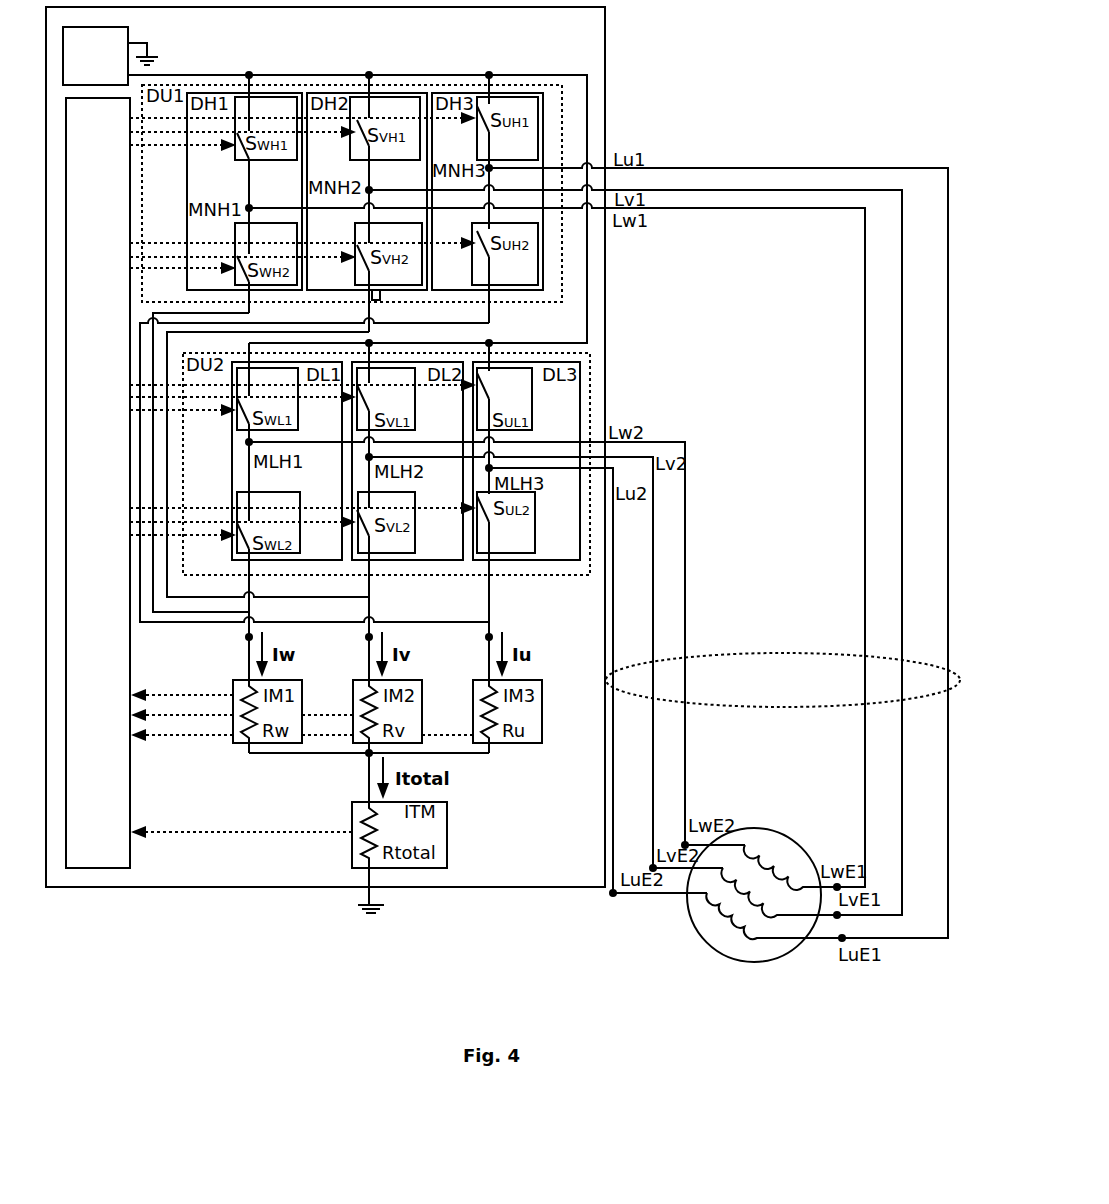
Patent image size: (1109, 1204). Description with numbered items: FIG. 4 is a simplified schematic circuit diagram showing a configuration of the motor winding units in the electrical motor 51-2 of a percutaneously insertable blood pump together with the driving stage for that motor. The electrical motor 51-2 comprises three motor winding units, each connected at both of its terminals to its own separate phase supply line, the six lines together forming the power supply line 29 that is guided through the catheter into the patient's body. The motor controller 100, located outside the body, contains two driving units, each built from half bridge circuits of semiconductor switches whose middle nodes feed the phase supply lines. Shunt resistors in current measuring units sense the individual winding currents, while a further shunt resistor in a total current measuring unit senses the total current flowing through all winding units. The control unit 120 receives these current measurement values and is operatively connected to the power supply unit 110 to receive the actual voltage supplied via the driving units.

The motor controller 100 is at (325, 447).
The power supply unit 110 is at (110, 56).
The control unit 120 is at (98, 483).
The power supply line 29 is at (783, 680).
The electrical motor 51-2 is at (752, 898).